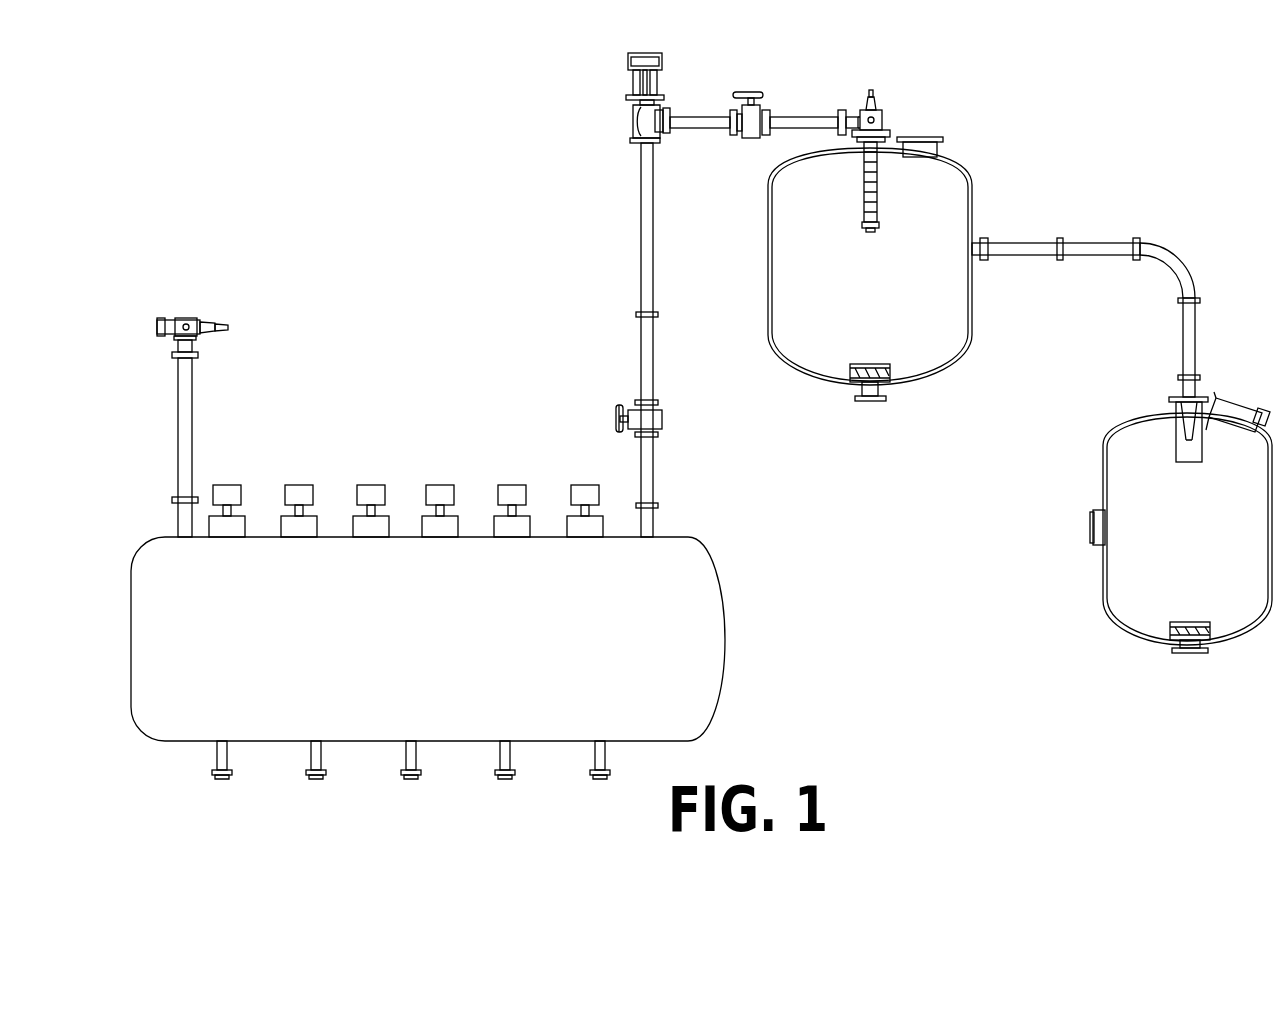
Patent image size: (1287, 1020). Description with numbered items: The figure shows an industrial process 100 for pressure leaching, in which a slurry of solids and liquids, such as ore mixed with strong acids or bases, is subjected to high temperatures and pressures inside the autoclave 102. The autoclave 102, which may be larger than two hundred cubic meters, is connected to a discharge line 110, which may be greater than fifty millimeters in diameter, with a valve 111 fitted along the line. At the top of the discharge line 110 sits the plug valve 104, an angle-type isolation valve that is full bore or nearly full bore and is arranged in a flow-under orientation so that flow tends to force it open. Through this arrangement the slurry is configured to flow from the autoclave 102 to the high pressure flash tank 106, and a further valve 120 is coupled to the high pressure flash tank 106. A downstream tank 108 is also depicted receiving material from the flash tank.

The industrial process 100 is at (355, 186).
The autoclave 102 is at (345, 512).
The plug valve 104 is at (592, 90).
The high pressure flash tank 106 is at (962, 172).
The receiving vessel 108 is at (1103, 572).
The discharge line 110 is at (620, 250).
The valve 111 is at (598, 378).
The valve 120 is at (845, 117).